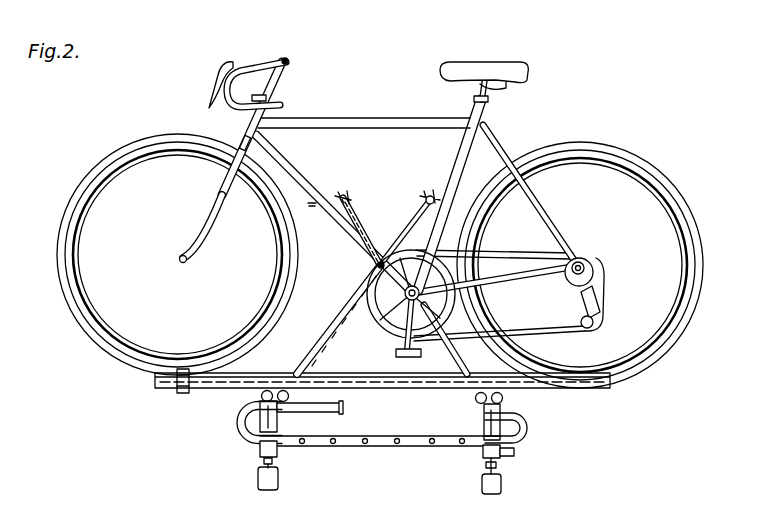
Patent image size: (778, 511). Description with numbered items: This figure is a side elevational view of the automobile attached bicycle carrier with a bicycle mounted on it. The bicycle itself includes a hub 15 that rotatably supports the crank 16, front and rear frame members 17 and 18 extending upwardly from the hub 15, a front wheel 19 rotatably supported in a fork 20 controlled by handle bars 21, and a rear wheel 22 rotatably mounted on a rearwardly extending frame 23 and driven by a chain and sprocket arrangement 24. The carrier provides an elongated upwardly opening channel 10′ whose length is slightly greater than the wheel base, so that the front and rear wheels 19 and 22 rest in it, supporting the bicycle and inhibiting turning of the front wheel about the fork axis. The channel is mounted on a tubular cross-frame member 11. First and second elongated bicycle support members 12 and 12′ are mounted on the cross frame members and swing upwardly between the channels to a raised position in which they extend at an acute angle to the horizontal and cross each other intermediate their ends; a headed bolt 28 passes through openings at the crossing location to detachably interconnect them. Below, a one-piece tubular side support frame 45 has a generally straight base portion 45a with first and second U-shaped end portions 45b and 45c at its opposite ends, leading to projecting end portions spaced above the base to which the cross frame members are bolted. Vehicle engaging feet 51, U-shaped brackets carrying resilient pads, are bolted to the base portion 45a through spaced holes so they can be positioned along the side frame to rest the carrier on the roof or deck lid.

The elongated upwardly opening channel 10′ is at (611, 388).
The cross-frame member 11 is at (254, 403).
The first elongated bicycle support member 12 is at (362, 198).
The second elongated bicycle support member 12′ is at (410, 221).
The hub 15 is at (380, 329).
The crank 16 is at (397, 351).
The front frame member 17 is at (300, 178).
The rear frame member 18 is at (462, 156).
The front wheel 19 is at (111, 151).
The fork 20 is at (218, 205).
The handle bars 21 is at (262, 63).
The rear wheel 22 is at (656, 172).
The rearwardly extending frame 23 is at (512, 280).
The chain and sprocket arrangement 24 is at (500, 252).
The headed bolt 28 is at (378, 268).
The side support frame 45 is at (386, 427).
The base portion 45a is at (395, 448).
The first U-shaped end portion 45b is at (528, 432).
The second U-shaped end portion 45c is at (240, 430).
The vehicle engaging foot 51 is at (514, 454).